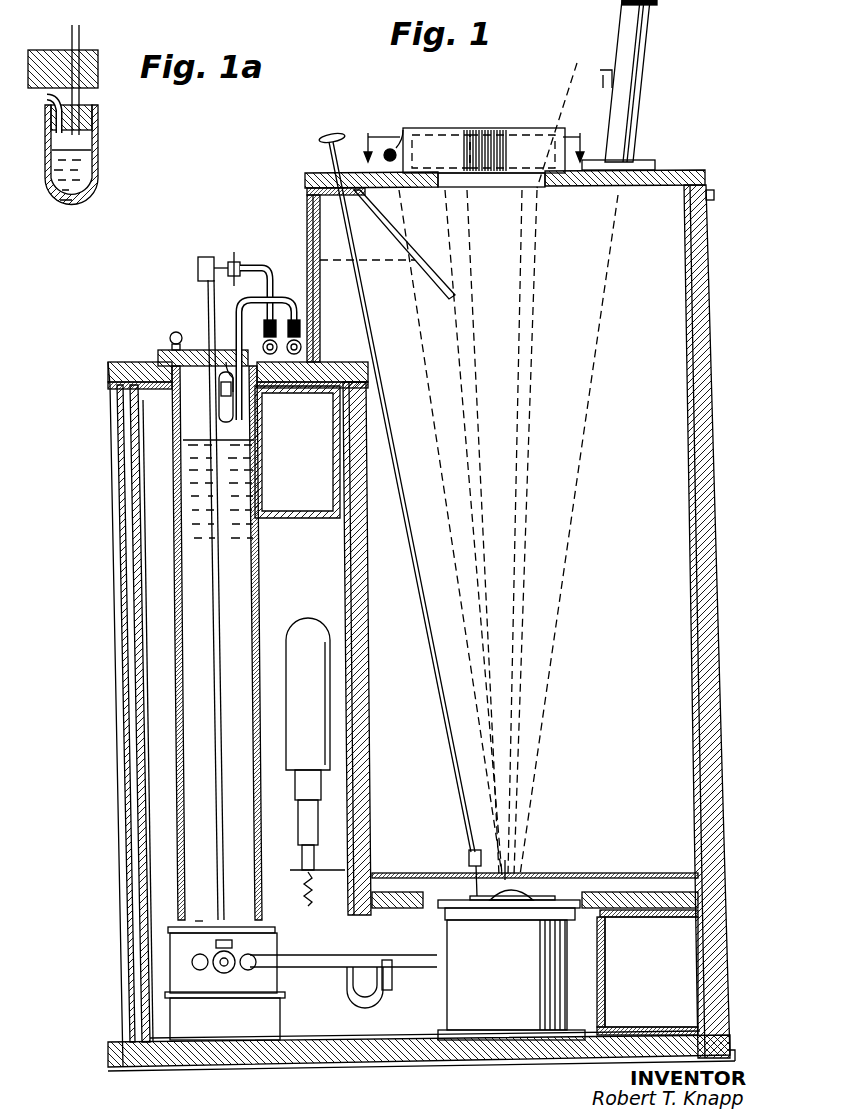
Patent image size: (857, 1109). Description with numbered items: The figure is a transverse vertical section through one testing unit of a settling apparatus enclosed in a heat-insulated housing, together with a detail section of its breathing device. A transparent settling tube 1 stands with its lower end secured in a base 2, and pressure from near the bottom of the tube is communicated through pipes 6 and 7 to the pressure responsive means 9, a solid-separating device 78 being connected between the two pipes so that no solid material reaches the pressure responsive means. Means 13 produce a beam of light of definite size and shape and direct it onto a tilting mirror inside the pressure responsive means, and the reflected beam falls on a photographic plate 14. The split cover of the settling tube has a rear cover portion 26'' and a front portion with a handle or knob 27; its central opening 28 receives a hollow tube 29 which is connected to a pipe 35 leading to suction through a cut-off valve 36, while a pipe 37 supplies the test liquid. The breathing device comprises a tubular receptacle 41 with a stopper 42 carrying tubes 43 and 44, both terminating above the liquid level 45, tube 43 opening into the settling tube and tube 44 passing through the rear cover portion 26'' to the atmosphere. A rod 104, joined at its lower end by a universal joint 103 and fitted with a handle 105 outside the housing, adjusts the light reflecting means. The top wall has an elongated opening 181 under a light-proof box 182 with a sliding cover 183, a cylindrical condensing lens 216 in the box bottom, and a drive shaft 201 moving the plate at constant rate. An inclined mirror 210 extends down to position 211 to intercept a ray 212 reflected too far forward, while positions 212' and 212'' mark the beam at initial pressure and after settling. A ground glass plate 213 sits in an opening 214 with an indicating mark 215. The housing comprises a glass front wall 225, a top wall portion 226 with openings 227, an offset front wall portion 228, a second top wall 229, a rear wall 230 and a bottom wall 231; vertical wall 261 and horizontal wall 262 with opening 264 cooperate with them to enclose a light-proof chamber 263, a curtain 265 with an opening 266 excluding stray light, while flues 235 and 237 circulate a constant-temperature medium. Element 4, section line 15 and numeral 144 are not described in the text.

In FIG. 1, the settling tube 1 is at (252, 592).
In FIG. 1, the base 2 is at (276, 945).
In FIG. 1, the pump 4 is at (232, 893).
In FIG. 1, the pipe 6 is at (303, 955).
In FIG. 1, the pipe 7 is at (385, 968).
In FIG. 1, the pressure responsive means 9 is at (470, 985).
In FIG. 1, the means for producing a beam of light 13 is at (658, 22).
In FIG. 1, the photographic plate 14 is at (512, 143).
In FIG. 1, the section line 15 is at (474, 132).
In FIG. 1A, the rear cover portion 26'' is at (60, 50).
In FIG. 1, the handle or knob 27 is at (172, 338).
In FIG. 1, the central opening 28 is at (208, 312).
In FIG. 1, the hollow rod or tube 29 is at (202, 260).
In FIG. 1, the pipe 35 is at (302, 350).
In FIG. 1, the cut-off valve 36 is at (300, 334).
In FIG. 1, the pipe 37 is at (239, 305).
In FIG. 1A, the tubular receptacle 41 is at (92, 142).
In FIG. 1, the tubular receptacle 41 is at (216, 418).
In FIG. 1, the stopper 42 is at (175, 412).
In FIG. 1A, the tube 43 is at (45, 98).
In FIG. 1, the tube 43 is at (228, 372).
In FIG. 1A, the tube 44 is at (62, 130).
In FIG. 1, the tube 44 is at (236, 345).
In FIG. 1A, the liquid level 45 is at (90, 165).
In FIG. 1, the liquid level 45 is at (175, 450).
In FIG. 1, the solid-separating device 78 is at (393, 977).
In FIG. 1, the universal joint 103 is at (468, 862).
In FIG. 1, the rod 104 is at (450, 748).
In FIG. 1, the handle 105 is at (322, 136).
In FIG. 1A, the tube 144 is at (80, 40).
In FIG. 1, the elongated opening 181 is at (500, 188).
In FIG. 1, the light-proof box 182 is at (425, 140).
In FIG. 1, the light-proof sliding cover 183 is at (450, 130).
In FIG. 1, the drive shaft 201 is at (393, 148).
In FIG. 1, the inclined mirror 210 is at (425, 228).
In FIG. 1, the position 211 is at (455, 298).
In FIG. 1, the light ray 212 is at (482, 532).
In FIG. 1, the position of reflected light beam 212' is at (554, 532).
In FIG. 1, the position of reflected light beam 212'' is at (535, 532).
In FIG. 1, the ground glass plate 213 is at (322, 290).
In FIG. 1, the opening 214 is at (312, 212).
In FIG. 1, the indicating mark 215 is at (313, 268).
In FIG. 1, the cylindrical condensing lens 216 is at (569, 461).
In FIG. 1, the transparent front wall 225 is at (108, 700).
In FIG. 1, the top wall portion 226 is at (108, 370).
In FIG. 1, the openings 227 is at (160, 358).
In FIG. 1, the inwardly offset front wall portion 228 is at (310, 300).
In FIG. 1, the second top wall portion 229 is at (672, 172).
In FIG. 1, the rear wall 230 is at (710, 513).
In FIG. 1, the bottom wall 231 is at (382, 1070).
In FIG. 1, the air circulating flue 235 is at (350, 420).
In FIG. 1, the air circulating flue 237 is at (705, 963).
In FIG. 1, the vertical wall 261 is at (360, 636).
In FIG. 1, the horizontal wall 262 is at (612, 890).
In FIG. 1, the light-proof chamber 263 is at (645, 603).
In FIG. 1, the opening 264 is at (582, 895).
In FIG. 1, the curtain 265 is at (600, 870).
In FIG. 1, the opening 266 is at (535, 870).